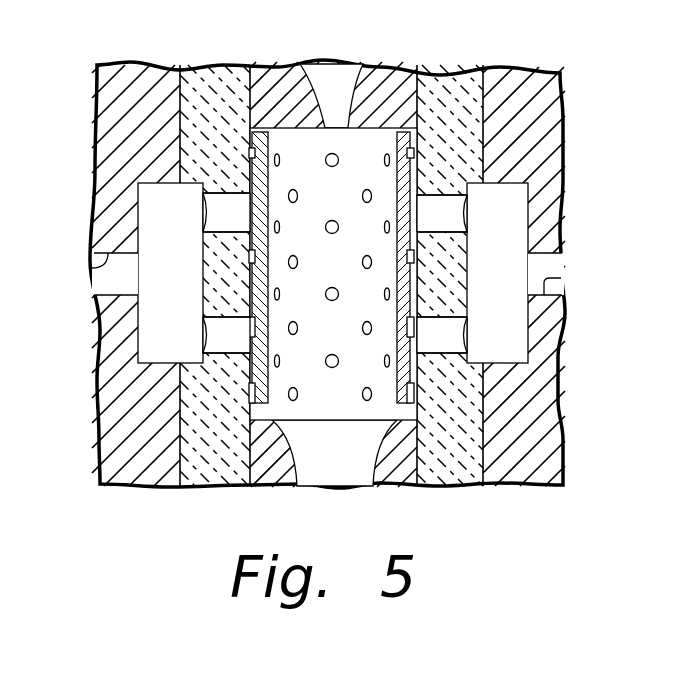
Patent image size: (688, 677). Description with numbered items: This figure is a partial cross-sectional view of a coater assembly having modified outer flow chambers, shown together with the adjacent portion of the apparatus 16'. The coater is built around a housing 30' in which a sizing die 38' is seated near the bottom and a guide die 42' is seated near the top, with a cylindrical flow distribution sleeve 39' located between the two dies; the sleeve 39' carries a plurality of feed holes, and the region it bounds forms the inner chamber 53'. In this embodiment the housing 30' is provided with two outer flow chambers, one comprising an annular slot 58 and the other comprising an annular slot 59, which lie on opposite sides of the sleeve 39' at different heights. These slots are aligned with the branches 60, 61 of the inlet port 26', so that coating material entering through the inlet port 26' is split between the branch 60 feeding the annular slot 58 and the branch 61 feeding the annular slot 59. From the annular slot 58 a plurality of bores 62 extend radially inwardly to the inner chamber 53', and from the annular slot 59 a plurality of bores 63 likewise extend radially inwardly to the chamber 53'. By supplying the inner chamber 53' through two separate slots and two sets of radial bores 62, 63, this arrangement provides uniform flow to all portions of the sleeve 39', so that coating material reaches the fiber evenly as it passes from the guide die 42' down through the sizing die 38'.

The apparatus 16' is at (327, 298).
The housing 30' is at (331, 301).
The sizing die 38' is at (335, 299).
The guide die 42' is at (362, 66).
The inner chamber 53' is at (395, 279).
The flow distribution sleeve 39' is at (435, 296).
The annular slot 58 is at (193, 215).
The annular slot 59 is at (193, 338).
The branch of inlet port 60 is at (532, 239).
The branch of inlet port 61 is at (532, 333).
The inlet port 26' is at (323, 274).
The bores 62 is at (232, 197).
The bores 63 is at (229, 349).